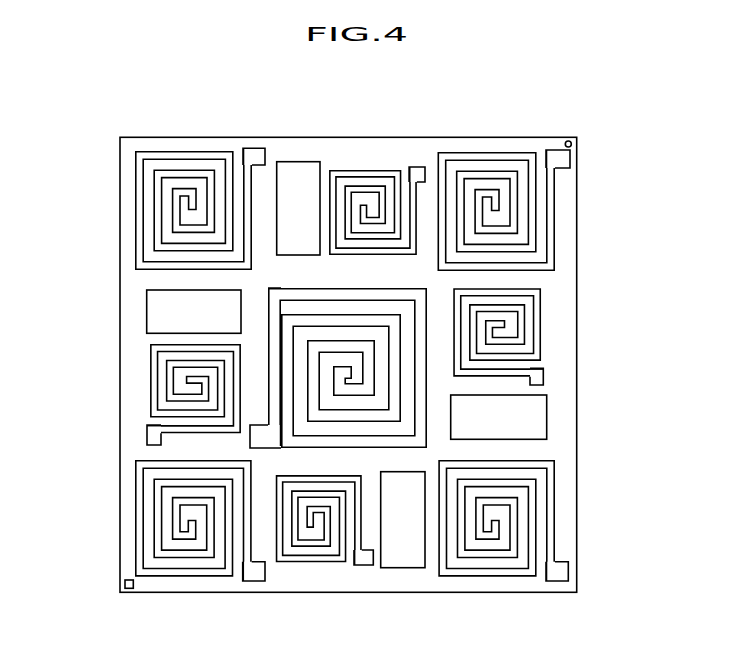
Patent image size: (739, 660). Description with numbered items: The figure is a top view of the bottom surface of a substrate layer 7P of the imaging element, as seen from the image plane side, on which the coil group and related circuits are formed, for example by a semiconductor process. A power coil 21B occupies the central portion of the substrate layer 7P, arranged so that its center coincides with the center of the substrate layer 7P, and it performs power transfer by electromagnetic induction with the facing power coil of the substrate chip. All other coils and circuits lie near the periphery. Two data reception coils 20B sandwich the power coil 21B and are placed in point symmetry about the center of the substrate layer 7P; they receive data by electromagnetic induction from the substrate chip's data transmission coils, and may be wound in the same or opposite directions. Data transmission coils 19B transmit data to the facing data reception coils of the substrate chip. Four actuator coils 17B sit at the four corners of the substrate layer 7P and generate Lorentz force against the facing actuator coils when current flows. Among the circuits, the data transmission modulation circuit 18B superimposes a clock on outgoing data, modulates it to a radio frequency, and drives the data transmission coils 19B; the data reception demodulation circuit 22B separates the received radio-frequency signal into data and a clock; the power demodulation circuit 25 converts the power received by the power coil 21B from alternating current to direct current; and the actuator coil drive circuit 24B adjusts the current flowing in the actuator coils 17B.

The substrate layer 7P is at (432, 150).
The actuator coil 17B is at (140, 212).
The data transmission modulation circuit 18B is at (408, 547).
The data transmission coil 19B is at (375, 175).
The data reception coil 20B is at (155, 402).
The power coil 21B is at (281, 290).
The data reception demodulation circuit 22B is at (525, 414).
The actuator coil drive circuit 24B is at (300, 172).
The power demodulation circuit 25 is at (155, 314).